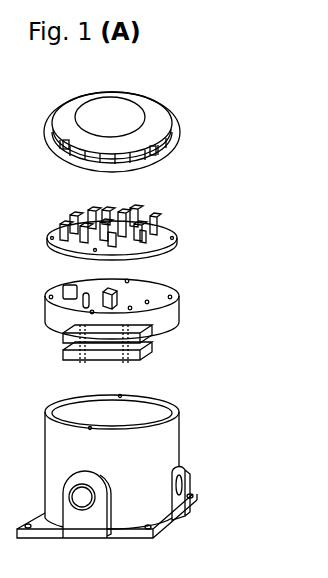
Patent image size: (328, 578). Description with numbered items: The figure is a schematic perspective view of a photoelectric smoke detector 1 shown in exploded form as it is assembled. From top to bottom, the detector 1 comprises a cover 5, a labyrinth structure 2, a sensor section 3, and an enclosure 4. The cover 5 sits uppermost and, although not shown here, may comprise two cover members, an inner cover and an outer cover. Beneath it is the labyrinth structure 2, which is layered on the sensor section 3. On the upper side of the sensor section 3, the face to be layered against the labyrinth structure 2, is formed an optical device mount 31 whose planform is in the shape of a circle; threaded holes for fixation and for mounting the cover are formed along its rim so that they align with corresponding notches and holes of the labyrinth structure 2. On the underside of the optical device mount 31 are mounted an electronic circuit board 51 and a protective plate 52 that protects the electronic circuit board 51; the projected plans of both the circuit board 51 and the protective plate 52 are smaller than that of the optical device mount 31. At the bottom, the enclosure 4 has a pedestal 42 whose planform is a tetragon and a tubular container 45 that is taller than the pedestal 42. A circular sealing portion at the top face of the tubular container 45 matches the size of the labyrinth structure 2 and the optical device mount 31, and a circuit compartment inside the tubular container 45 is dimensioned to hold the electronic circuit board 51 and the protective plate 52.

The photoelectric smoke detector 1 is at (292, 85).
The cover 5 is at (194, 128).
The labyrinth structure 2 is at (195, 226).
The sensor section 3 is at (250, 272).
The optical device mount 31 is at (175, 307).
The electronic circuit board 51 is at (153, 330).
The protective plate 52 is at (155, 348).
The enclosure 4 is at (245, 418).
The tubular container 45 is at (168, 452).
The pedestal 42 is at (185, 497).